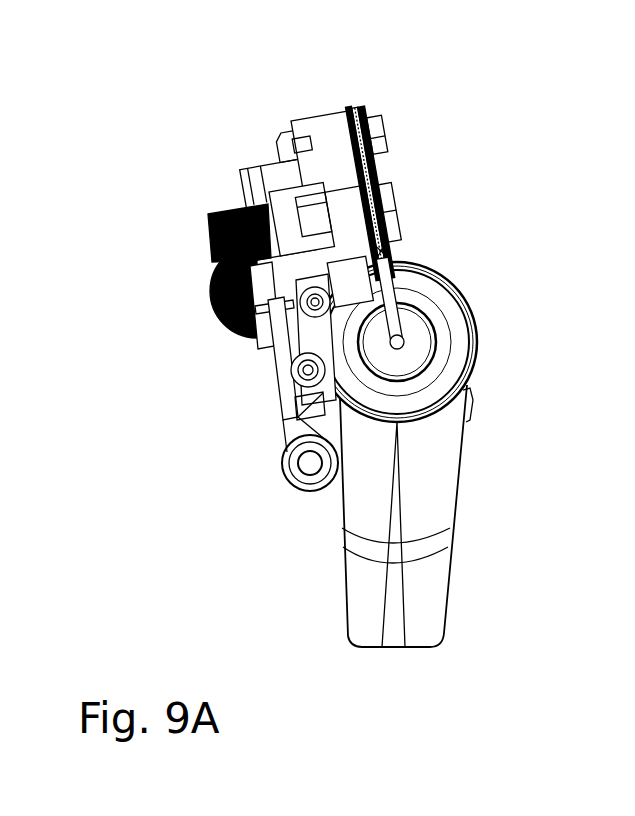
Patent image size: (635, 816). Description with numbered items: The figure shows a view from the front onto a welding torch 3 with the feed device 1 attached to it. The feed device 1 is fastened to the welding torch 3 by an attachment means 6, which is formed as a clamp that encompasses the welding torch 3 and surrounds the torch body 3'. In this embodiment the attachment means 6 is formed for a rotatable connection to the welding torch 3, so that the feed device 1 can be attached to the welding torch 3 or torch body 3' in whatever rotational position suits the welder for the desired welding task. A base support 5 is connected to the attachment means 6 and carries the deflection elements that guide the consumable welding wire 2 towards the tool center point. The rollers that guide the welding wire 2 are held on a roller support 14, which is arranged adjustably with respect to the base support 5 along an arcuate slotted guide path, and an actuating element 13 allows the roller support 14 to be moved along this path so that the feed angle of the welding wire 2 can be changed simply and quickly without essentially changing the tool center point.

The feed device 1 is at (236, 88).
The welding wire 2 is at (392, 312).
The welding torch 3 is at (468, 516).
The torch body 3' is at (473, 534).
The base support 5 is at (290, 303).
The attachment means 6 is at (478, 347).
The actuating element 13 is at (207, 287).
The roller support 14 is at (333, 135).